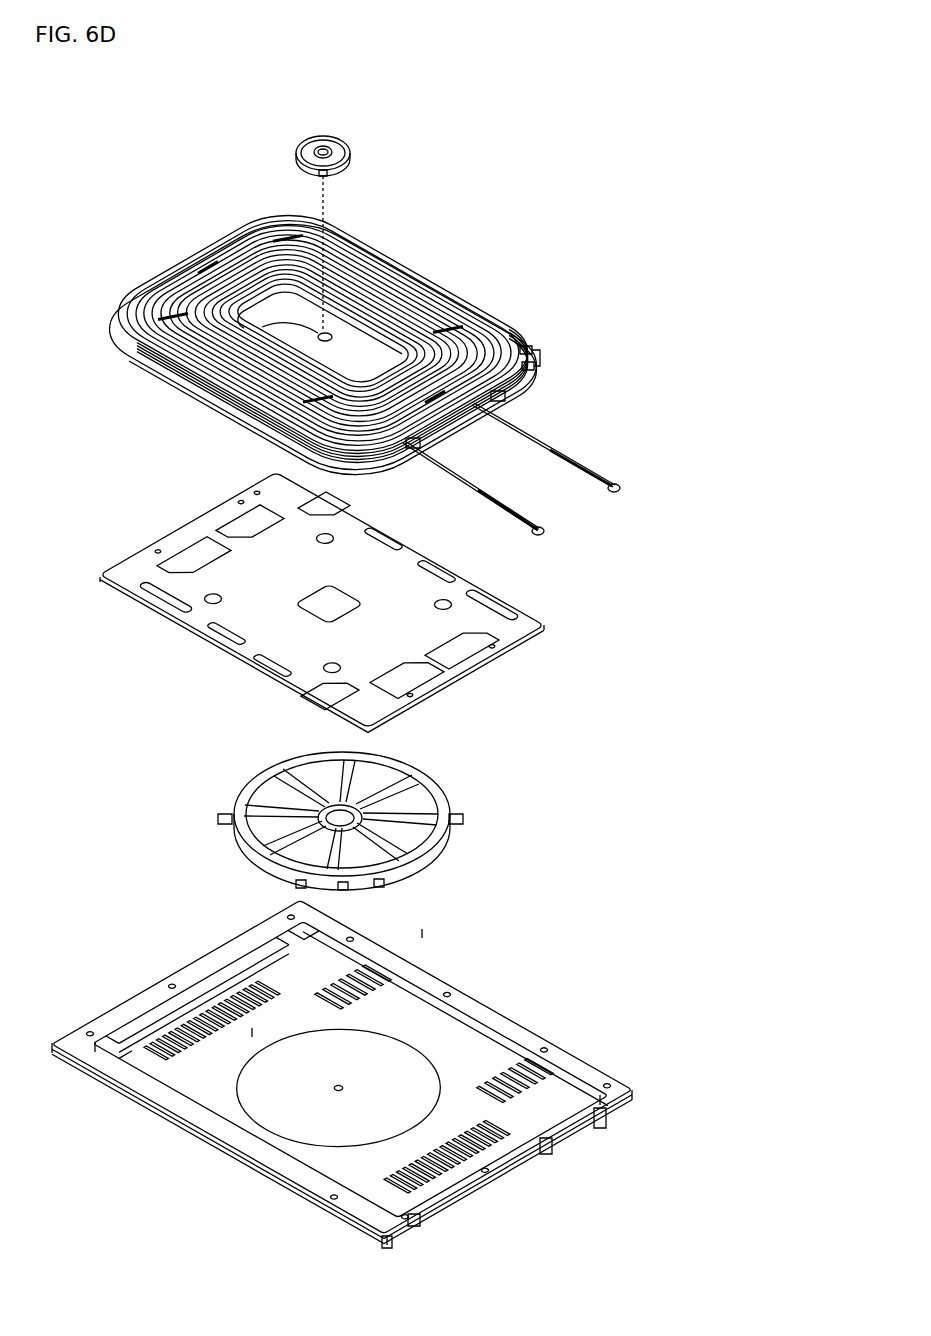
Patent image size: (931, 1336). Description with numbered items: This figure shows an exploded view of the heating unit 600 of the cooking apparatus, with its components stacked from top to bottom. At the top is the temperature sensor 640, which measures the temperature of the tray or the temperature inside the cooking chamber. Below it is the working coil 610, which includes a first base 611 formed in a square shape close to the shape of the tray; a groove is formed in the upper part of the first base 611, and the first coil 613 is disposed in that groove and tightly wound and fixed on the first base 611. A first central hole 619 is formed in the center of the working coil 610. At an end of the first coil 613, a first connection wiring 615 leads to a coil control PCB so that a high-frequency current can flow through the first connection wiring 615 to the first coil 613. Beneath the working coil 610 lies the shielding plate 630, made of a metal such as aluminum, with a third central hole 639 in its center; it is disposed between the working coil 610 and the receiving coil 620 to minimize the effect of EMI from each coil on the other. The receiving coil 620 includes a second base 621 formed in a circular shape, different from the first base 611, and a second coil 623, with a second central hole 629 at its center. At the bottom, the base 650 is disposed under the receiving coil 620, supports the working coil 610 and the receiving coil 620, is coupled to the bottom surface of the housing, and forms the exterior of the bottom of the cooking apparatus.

The heating unit 600 is at (578, 231).
The working coil 610 is at (427, 262).
The first base 611 is at (360, 240).
The first coil 613 is at (210, 293).
The first central hole 619 is at (166, 356).
The first connection wiring 615 is at (540, 440).
The shielding plate 630 is at (530, 597).
The third central hole 639 is at (328, 604).
The receiving coil 620 is at (465, 786).
The second base 621 is at (398, 775).
The second coil 623 is at (413, 873).
The second central hole 629 is at (338, 805).
The temperature sensor 640 is at (362, 145).
The base 650 is at (283, 1163).